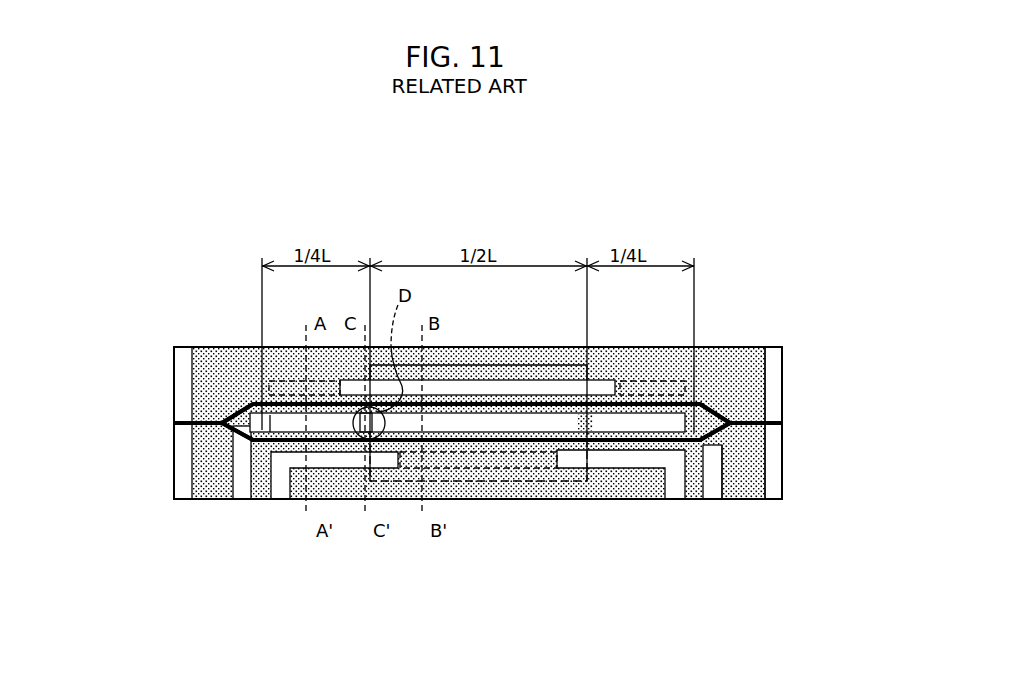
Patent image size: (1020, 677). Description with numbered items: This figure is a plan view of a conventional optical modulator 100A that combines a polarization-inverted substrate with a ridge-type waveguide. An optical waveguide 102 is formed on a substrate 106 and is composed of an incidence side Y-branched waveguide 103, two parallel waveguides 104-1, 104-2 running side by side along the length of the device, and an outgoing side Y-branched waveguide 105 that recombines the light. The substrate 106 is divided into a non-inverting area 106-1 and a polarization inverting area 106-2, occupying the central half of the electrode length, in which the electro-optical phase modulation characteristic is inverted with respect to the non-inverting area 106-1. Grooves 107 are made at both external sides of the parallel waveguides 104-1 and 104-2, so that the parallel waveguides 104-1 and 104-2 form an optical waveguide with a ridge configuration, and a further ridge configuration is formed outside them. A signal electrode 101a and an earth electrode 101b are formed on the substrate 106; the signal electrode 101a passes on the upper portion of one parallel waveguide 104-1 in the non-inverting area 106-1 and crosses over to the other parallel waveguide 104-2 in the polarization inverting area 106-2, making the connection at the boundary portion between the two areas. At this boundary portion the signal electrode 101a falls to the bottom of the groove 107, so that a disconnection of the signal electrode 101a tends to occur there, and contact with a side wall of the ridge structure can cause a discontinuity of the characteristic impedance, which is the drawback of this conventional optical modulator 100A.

The optical modulator 100A is at (716, 325).
The signal electrode 101a is at (258, 500).
The earth electrode 101b is at (742, 492).
The optical waveguide 102 is at (183, 426).
The incidence side Y-branched waveguide 103 is at (251, 402).
The parallel waveguide 104-1 is at (492, 398).
The parallel waveguide 104-2 is at (337, 445).
The outgoing side Y-branched waveguide 105 is at (717, 402).
The substrate 106 is at (782, 357).
The non-inverting area 106-1 is at (764, 465).
The polarization inverting area 106-2 is at (512, 483).
The groove 107 is at (545, 379).